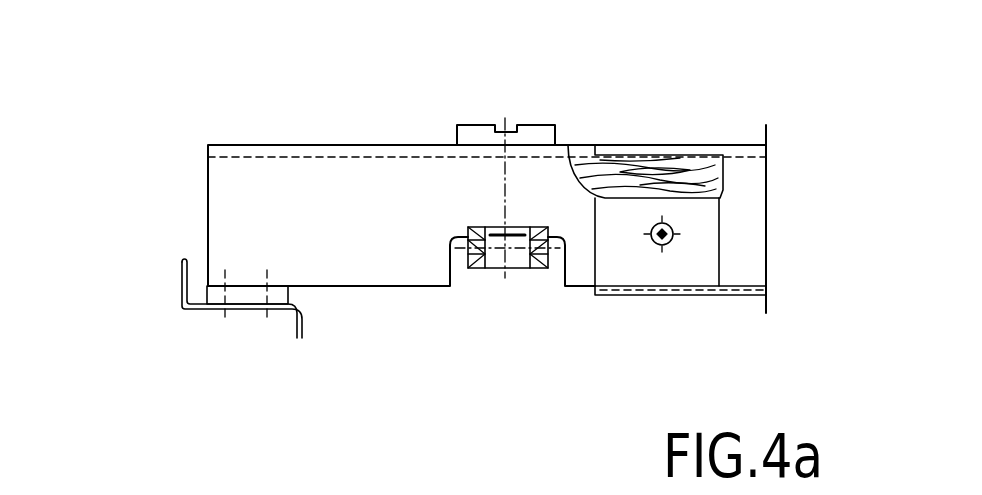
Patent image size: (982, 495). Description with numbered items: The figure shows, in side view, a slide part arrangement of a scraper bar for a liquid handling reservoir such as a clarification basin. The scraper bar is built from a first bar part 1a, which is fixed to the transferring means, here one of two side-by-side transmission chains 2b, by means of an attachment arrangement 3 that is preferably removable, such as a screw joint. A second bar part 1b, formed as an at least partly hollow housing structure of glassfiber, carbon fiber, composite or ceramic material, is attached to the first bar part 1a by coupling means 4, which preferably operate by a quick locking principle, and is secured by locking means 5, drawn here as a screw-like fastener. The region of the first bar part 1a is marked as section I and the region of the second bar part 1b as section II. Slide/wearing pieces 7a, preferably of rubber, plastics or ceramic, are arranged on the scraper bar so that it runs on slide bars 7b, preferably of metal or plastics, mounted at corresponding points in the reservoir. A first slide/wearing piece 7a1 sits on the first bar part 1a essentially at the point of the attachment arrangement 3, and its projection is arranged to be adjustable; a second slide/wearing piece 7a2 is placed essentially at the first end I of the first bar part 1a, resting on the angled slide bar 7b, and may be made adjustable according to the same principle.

The first bar part 1a is at (230, 188).
The second bar part 1b is at (740, 213).
The first end I is at (200, 236).
The second section II is at (747, 219).
The transmission chain 2b is at (477, 270).
The attachment arrangement 3 is at (465, 276).
The coupling means 4 is at (672, 137).
The locking means 5 is at (657, 247).
The slide/wearing piece 7a is at (327, 216).
The first slide/wearing piece 7a1 is at (472, 120).
The second slide/wearing piece 7a2 is at (225, 307).
The slide bar 7b is at (183, 290).